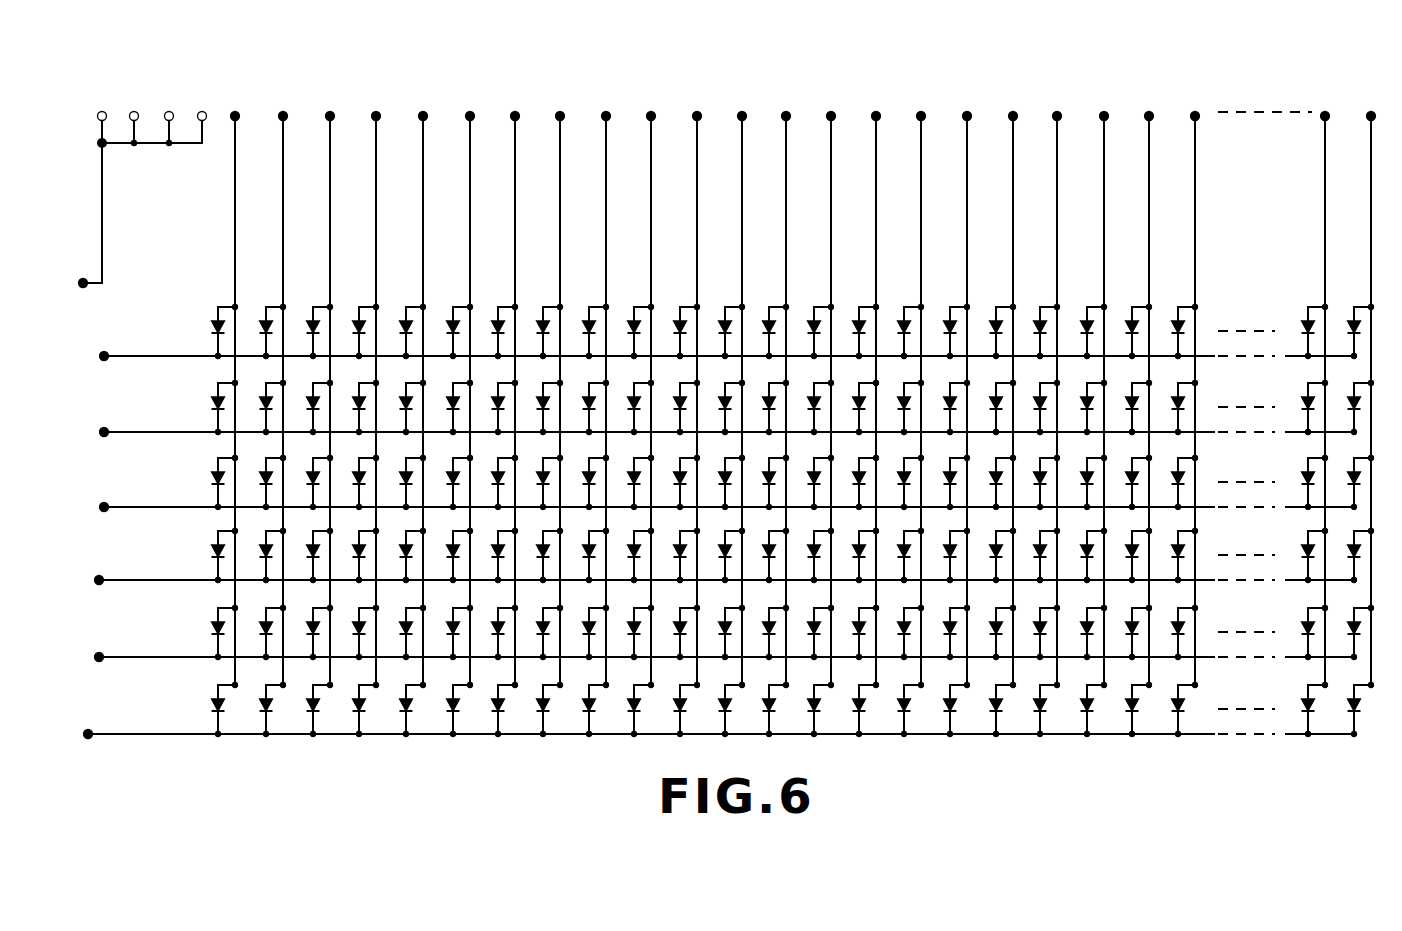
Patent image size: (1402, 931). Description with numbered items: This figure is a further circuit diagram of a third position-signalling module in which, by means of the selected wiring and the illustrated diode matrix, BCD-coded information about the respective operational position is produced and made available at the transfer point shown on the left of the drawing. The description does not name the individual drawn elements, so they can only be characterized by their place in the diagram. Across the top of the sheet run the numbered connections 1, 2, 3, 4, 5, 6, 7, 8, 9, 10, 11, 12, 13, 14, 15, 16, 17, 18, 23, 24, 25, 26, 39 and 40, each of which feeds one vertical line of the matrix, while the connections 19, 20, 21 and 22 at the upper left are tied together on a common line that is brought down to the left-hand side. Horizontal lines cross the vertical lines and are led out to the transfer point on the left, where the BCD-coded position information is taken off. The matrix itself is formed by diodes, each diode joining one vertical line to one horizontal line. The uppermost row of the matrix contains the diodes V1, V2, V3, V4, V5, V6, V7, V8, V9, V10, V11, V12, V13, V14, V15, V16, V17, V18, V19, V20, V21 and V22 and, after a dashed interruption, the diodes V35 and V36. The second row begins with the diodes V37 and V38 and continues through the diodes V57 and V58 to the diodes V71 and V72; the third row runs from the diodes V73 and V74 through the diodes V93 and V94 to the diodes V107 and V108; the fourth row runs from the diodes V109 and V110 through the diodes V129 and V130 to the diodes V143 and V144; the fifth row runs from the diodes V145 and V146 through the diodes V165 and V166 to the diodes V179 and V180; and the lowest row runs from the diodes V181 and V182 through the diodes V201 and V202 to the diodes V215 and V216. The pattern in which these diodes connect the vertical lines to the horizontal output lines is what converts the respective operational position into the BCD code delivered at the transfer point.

The common terminal 1 is at (159, 382).
The terminal 2 / row line 2 is at (194, 382).
The terminal 3 / row line 3 is at (217, 382).
The terminal 4 / row line 4 is at (239, 382).
The terminal 5 / row line 5 is at (261, 382).
The terminal 6 / row line 6 is at (283, 382).
The terminal 7 / row line 7 is at (303, 409).
The terminal 8 is at (560, 382).
The terminal 9 is at (606, 382).
The terminal 10 is at (650, 382).
The terminal 11 is at (696, 382).
The terminal 12 is at (741, 382).
The terminal 13 is at (785, 382).
The terminal 14 is at (830, 382).
The terminal 15 is at (875, 382).
The terminal 16 is at (920, 382).
The terminal 17 is at (966, 382).
The terminal 18 is at (1012, 382).
The terminal 19 is at (101, 101).
The terminal 20 is at (133, 101).
The terminal 21 is at (168, 101).
The terminal 22 is at (201, 101).
The terminal 23 is at (1056, 382).
The terminal 24 is at (1103, 382).
The terminal 25 is at (1148, 382).
The terminal 26 is at (1194, 382).
The terminal 39 is at (1324, 382).
The terminal 40 is at (1370, 382).
The diode V1 is at (219, 320).
The diode V2 is at (267, 320).
The diode V3 is at (314, 320).
The diode V4 is at (360, 320).
The diode V5 is at (407, 320).
The diode V6 is at (454, 320).
The diode V7 is at (499, 320).
The diode V8 is at (544, 320).
The diode V9 is at (590, 320).
The diode V10 is at (630, 320).
The diode V11 is at (676, 320).
The diode V12 is at (721, 320).
The diode V13 is at (765, 320).
The diode V14 is at (810, 320).
The diode V15 is at (855, 320).
The diode V16 is at (900, 320).
The diode V17 is at (946, 320).
The diode V18 is at (992, 320).
The diode V19 is at (1036, 320).
The diode V20 is at (1083, 320).
The diode V21 is at (1128, 320).
The diode V22 is at (1174, 320).
The diode V35 is at (1303, 320).
The diode V36 is at (1350, 320).
The diode V37 is at (212, 397).
The diode V38 is at (262, 397).
The diode V57 is at (1128, 397).
The diode V58 is at (1174, 397).
The diode V71 is at (1303, 397).
The diode V72 is at (1350, 397).
The diode V73 is at (212, 472).
The diode V74 is at (262, 472).
The diode V93 is at (1128, 472).
The diode V94 is at (1174, 472).
The diode V107 is at (1296, 472).
The diode V108 is at (1344, 472).
The diode V109 is at (206, 546).
The diode V110 is at (256, 546).
The diode V129 is at (1121, 546).
The diode V130 is at (1168, 546).
The diode V143 is at (1296, 546).
The diode V144 is at (1344, 546).
The diode V145 is at (206, 622).
The diode V146 is at (256, 622).
The diode V165 is at (1121, 622).
The diode V166 is at (1168, 622).
The diode V179 is at (1296, 622).
The diode V180 is at (1344, 622).
The diode V181 is at (206, 699).
The diode V182 is at (256, 699).
The diode V201 is at (1121, 699).
The diode V202 is at (1168, 699).
The diode V215 is at (1296, 699).
The diode V216 is at (1344, 699).